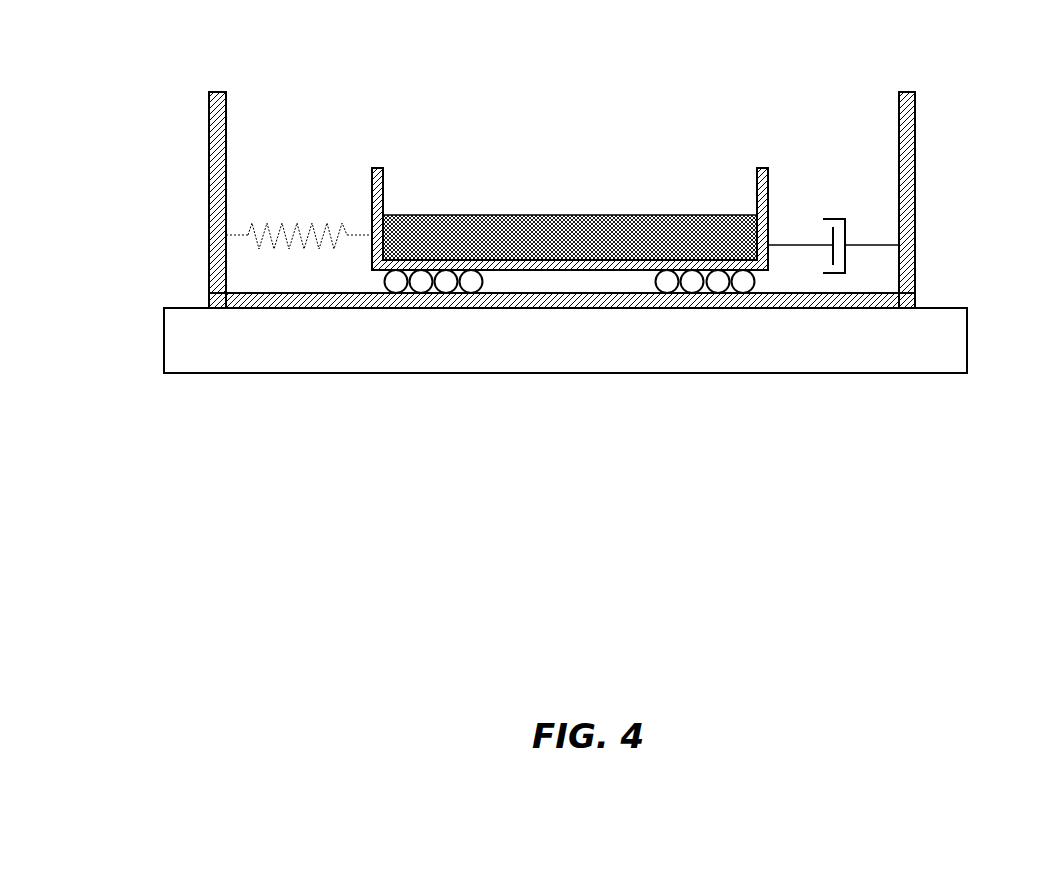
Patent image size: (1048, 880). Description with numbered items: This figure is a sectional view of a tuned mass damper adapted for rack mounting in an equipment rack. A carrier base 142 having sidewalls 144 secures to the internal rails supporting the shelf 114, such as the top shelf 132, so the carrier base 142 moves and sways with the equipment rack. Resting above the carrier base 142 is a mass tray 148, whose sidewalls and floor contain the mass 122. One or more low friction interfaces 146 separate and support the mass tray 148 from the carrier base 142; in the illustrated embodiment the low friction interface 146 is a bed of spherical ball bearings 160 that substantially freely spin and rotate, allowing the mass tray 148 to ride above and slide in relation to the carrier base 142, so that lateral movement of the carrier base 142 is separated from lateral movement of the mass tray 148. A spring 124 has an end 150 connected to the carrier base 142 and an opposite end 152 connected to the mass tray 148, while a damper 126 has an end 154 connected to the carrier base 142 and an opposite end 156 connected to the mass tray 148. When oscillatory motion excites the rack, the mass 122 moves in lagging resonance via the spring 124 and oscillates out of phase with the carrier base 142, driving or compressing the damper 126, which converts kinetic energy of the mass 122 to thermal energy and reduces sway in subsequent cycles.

The shelf 114 is at (967, 358).
The mass 122 is at (538, 222).
The spring 124 is at (297, 222).
The damper 126 is at (833, 219).
The top shelf 132 is at (164, 362).
The carrier base 142 is at (209, 298).
The sidewalls 144 is at (209, 117).
The low friction interface 146 is at (386, 279).
The mass tray 148 is at (373, 168).
The end 150 is at (224, 237).
The opposite end 152 is at (370, 233).
The end 154 is at (897, 243).
The opposite end 156 is at (772, 243).
The ball bearings 160 is at (471, 294).